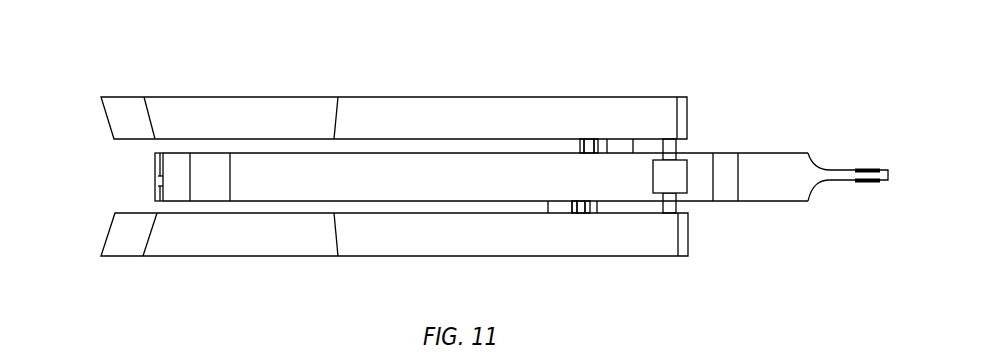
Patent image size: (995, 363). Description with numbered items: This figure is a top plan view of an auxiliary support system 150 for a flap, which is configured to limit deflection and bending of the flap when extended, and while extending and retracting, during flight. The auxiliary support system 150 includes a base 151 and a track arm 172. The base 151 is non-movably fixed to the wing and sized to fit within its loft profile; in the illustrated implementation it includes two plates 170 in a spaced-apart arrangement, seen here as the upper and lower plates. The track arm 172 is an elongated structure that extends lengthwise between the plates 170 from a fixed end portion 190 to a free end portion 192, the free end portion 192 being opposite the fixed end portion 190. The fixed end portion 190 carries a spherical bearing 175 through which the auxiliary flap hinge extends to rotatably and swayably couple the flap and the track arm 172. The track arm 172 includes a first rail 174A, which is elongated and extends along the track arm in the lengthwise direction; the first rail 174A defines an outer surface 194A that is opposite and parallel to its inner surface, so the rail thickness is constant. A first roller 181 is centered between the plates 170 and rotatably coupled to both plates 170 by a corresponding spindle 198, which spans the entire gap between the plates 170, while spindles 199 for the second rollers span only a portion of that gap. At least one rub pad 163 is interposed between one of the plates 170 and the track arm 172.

The auxiliary support system 150 is at (679, 74).
The base 151 is at (282, 84).
The plates 170 is at (212, 98).
The track arm 172 is at (508, 146).
The first rail 174A is at (333, 176).
The outer surface 194A is at (425, 176).
The free end portion 192 is at (146, 179).
The rub pad 163 is at (620, 150).
The spindle 198 is at (582, 140).
The spindle 199 is at (600, 140).
The first roller 181 is at (677, 167).
The spherical bearing 175 is at (867, 178).
The fixed end portion 190 is at (896, 164).